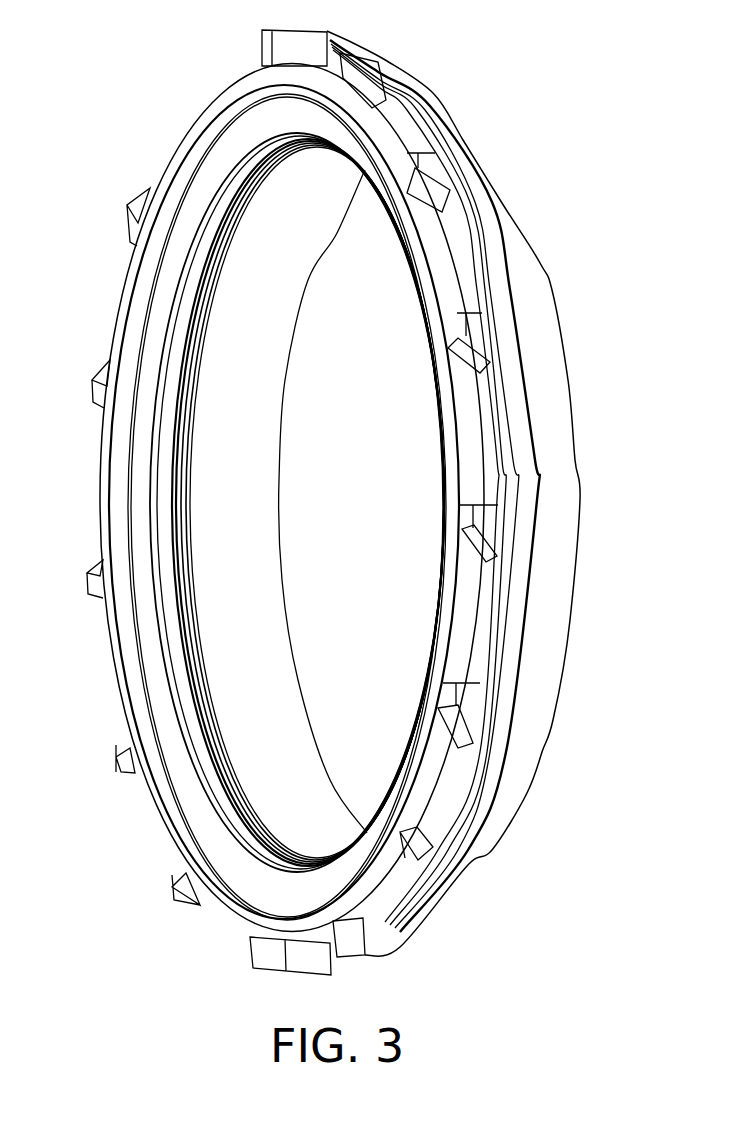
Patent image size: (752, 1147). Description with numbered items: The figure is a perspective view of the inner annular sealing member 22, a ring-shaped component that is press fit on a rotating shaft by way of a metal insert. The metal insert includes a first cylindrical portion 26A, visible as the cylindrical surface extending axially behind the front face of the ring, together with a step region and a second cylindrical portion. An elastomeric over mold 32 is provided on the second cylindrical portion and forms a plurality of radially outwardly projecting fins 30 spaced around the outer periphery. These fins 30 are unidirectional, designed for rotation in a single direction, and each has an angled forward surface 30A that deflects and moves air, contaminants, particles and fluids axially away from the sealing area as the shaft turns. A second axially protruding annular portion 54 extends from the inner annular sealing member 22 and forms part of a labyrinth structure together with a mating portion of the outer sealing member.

The inner annular sealing member 22 is at (550, 118).
The first cylindrical portion 26A is at (552, 342).
The radially outwardly projecting fins 30 is at (125, 212).
The angled forward surface 30A is at (458, 727).
The elastomeric over mold 32 is at (430, 94).
The second axially protruding annular portion 54 is at (538, 464).